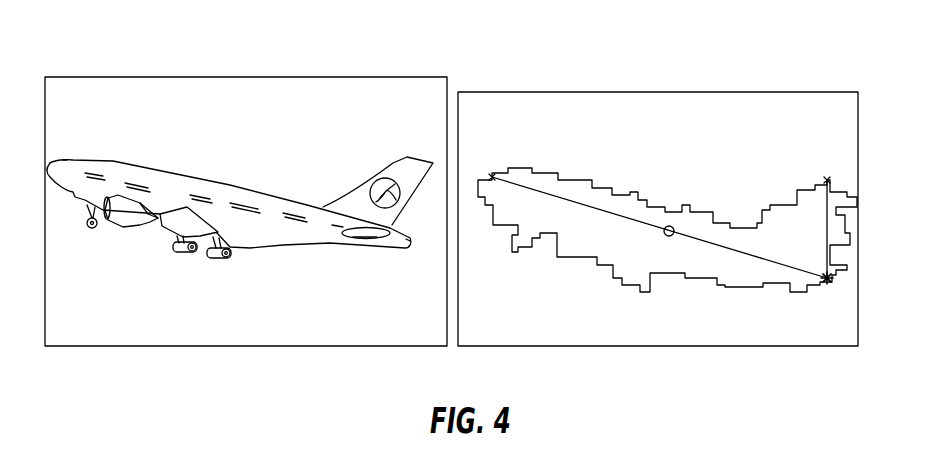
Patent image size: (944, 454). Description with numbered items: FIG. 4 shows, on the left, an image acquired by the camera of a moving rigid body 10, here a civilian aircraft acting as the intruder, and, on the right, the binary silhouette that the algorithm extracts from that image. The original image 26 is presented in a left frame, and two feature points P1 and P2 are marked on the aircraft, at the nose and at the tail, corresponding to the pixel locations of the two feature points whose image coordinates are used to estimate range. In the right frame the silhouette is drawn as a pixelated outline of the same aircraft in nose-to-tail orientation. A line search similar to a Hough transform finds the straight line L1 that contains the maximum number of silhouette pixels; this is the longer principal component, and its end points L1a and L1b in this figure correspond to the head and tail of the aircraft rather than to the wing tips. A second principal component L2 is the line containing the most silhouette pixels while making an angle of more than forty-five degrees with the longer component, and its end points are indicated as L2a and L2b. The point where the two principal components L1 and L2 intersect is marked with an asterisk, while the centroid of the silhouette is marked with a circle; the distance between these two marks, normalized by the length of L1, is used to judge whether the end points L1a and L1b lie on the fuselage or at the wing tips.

The moving rigid body 10 is at (243, 186).
The image frame 26 is at (447, 77).
The first feature point P1 is at (65, 160).
The second feature point P2 is at (408, 240).
The longer principal component line L1 is at (637, 222).
The second principal component line L2 is at (823, 233).
The first end point of the longer principal component L1a is at (576, 92).
The second end point of the longer principal component L1b is at (827, 281).
The first end point of second line L2a is at (803, 91).
The second end point of second line L2b is at (829, 283).